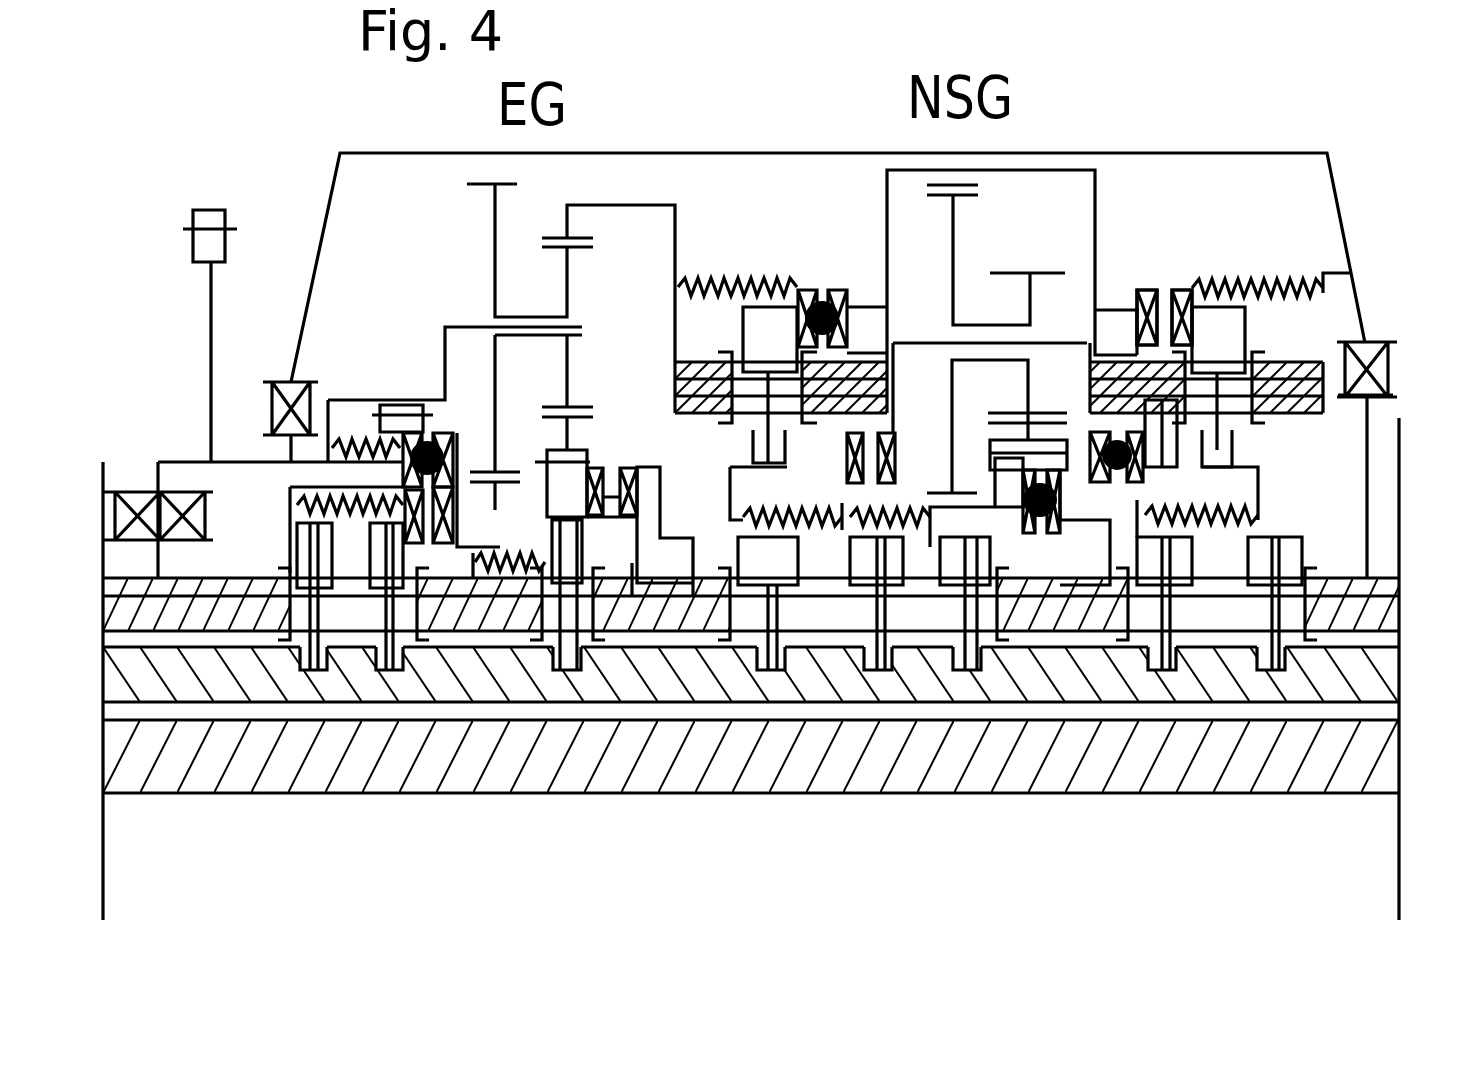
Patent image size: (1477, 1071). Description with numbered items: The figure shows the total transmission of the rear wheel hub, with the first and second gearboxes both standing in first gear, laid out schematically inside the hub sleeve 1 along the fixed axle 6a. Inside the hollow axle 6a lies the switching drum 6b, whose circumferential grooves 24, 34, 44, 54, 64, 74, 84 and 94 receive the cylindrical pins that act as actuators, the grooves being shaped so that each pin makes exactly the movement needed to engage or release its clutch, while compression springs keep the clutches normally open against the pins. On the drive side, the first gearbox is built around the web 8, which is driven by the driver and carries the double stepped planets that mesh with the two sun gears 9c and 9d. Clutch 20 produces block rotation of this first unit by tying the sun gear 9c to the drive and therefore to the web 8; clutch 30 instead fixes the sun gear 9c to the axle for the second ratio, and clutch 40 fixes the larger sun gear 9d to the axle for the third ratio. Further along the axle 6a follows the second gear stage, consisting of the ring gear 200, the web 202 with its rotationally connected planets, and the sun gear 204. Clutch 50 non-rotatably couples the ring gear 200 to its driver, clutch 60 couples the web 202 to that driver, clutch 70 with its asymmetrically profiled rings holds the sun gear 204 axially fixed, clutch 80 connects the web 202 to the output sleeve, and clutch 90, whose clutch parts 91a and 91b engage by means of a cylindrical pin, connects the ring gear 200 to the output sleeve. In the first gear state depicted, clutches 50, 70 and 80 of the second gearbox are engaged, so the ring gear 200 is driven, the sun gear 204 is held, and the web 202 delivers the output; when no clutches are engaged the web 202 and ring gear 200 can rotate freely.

The hub sleeve 1 is at (1332, 182).
The axle 6a is at (1378, 605).
The switching drum 6b is at (1375, 673).
The web 8 is at (443, 350).
The sun gear 9c is at (495, 507).
The sun gear 9d is at (570, 436).
The clutch 20 is at (420, 440).
The circumferential groove 24 is at (313, 672).
The clutch 30 is at (443, 525).
The circumferential groove 34 is at (390, 672).
The clutch 40 is at (612, 497).
The circumferential groove 44 is at (567, 672).
The clutch 50 is at (825, 295).
The circumferential groove 54 is at (770, 672).
The clutch 60 is at (868, 473).
The circumferential groove 64 is at (877, 670).
The clutch 70 is at (1043, 505).
The circumferential groove 74 is at (972, 670).
The clutch 80 is at (1113, 478).
The circumferential groove 84 is at (1168, 670).
The clutch 90 is at (1165, 320).
The clutch part 91a is at (1180, 290).
The clutch part 91b is at (1145, 290).
The circumferential groove 94 is at (1277, 672).
The ring gear 200 is at (953, 178).
The web 202 is at (920, 343).
The sun gear 204 is at (1033, 430).